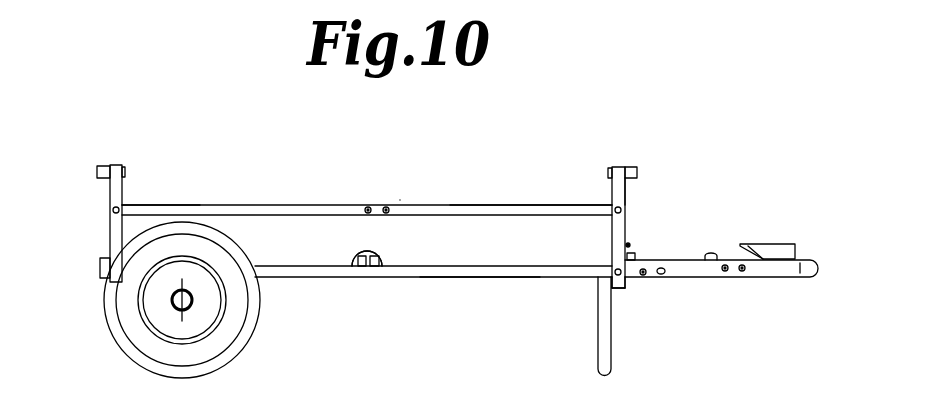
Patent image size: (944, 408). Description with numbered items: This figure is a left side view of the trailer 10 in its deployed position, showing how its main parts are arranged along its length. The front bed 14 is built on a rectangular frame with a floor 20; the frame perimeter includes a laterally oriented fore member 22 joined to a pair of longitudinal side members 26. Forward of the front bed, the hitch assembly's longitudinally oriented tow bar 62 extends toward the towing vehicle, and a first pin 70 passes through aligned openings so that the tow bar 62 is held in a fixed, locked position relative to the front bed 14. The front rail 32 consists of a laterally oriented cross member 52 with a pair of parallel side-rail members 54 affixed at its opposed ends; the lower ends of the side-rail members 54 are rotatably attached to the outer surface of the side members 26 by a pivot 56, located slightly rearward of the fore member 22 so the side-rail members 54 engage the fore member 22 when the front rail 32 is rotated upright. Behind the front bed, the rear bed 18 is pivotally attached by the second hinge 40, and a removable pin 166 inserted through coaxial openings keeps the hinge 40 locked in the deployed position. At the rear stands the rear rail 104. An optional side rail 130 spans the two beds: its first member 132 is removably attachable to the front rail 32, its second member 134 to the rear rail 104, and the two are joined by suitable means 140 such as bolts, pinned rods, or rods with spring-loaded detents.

The trailer 10 is at (675, 68).
The front bed 14 is at (474, 293).
The rear bed 18 is at (294, 292).
The floor 20 is at (453, 266).
The fore member 22 is at (631, 256).
The side member 26 is at (571, 278).
The front rail 32 is at (638, 180).
The second hinge 40 is at (373, 293).
The cross member 52 is at (629, 170).
The side-rail member 54 is at (621, 225).
The pivot 56 is at (625, 283).
The tow bar 62 is at (700, 278).
The first pin 70 is at (663, 270).
The rear rail 104 is at (99, 184).
The side rail 130 is at (213, 194).
The first member 132 is at (524, 205).
The second member 134 is at (153, 205).
The joining means 140 is at (386, 207).
The removable pin 166 is at (352, 247).